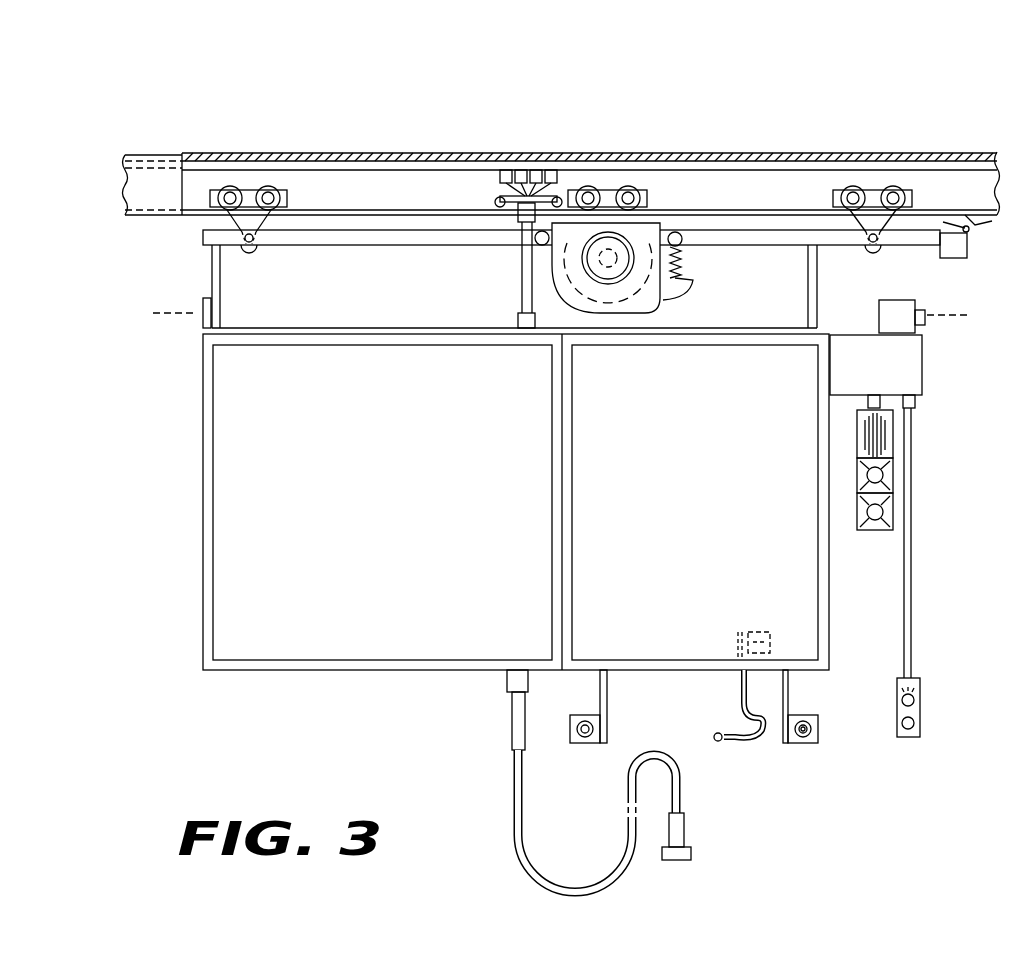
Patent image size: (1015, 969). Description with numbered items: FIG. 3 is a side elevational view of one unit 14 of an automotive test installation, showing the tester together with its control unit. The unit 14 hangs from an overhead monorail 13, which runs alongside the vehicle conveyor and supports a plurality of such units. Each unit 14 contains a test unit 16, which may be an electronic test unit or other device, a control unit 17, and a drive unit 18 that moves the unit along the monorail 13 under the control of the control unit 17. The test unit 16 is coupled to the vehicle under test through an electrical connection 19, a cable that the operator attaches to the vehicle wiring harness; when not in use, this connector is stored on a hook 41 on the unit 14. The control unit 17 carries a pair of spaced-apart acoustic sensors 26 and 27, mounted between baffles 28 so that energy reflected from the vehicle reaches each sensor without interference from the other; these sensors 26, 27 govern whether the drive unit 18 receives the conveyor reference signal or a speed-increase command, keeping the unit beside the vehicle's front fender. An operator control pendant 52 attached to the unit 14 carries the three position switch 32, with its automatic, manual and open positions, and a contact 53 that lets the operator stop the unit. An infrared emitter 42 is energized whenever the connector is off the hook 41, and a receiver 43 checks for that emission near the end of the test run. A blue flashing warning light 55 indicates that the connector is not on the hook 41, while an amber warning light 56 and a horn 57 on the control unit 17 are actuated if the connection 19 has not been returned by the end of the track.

The monorail 13 is at (162, 153).
The unit 14 is at (195, 484).
The test unit 16 is at (369, 628).
The control unit 17 is at (790, 589).
The drive unit 18 is at (620, 305).
The electrical connection 19 is at (678, 838).
The sensor 26 is at (588, 742).
The sensor 27 is at (803, 745).
The baffles 28 is at (588, 715).
The three position switch 32 is at (915, 700).
The hook 41 is at (735, 735).
The infrared emitter 42 is at (926, 310).
The receiver 43 is at (205, 300).
The control pendant 52 is at (939, 733).
The contact 53 is at (915, 725).
The warning light 55 is at (875, 510).
The amber warning light 56 is at (875, 475).
The horn 57 is at (870, 434).